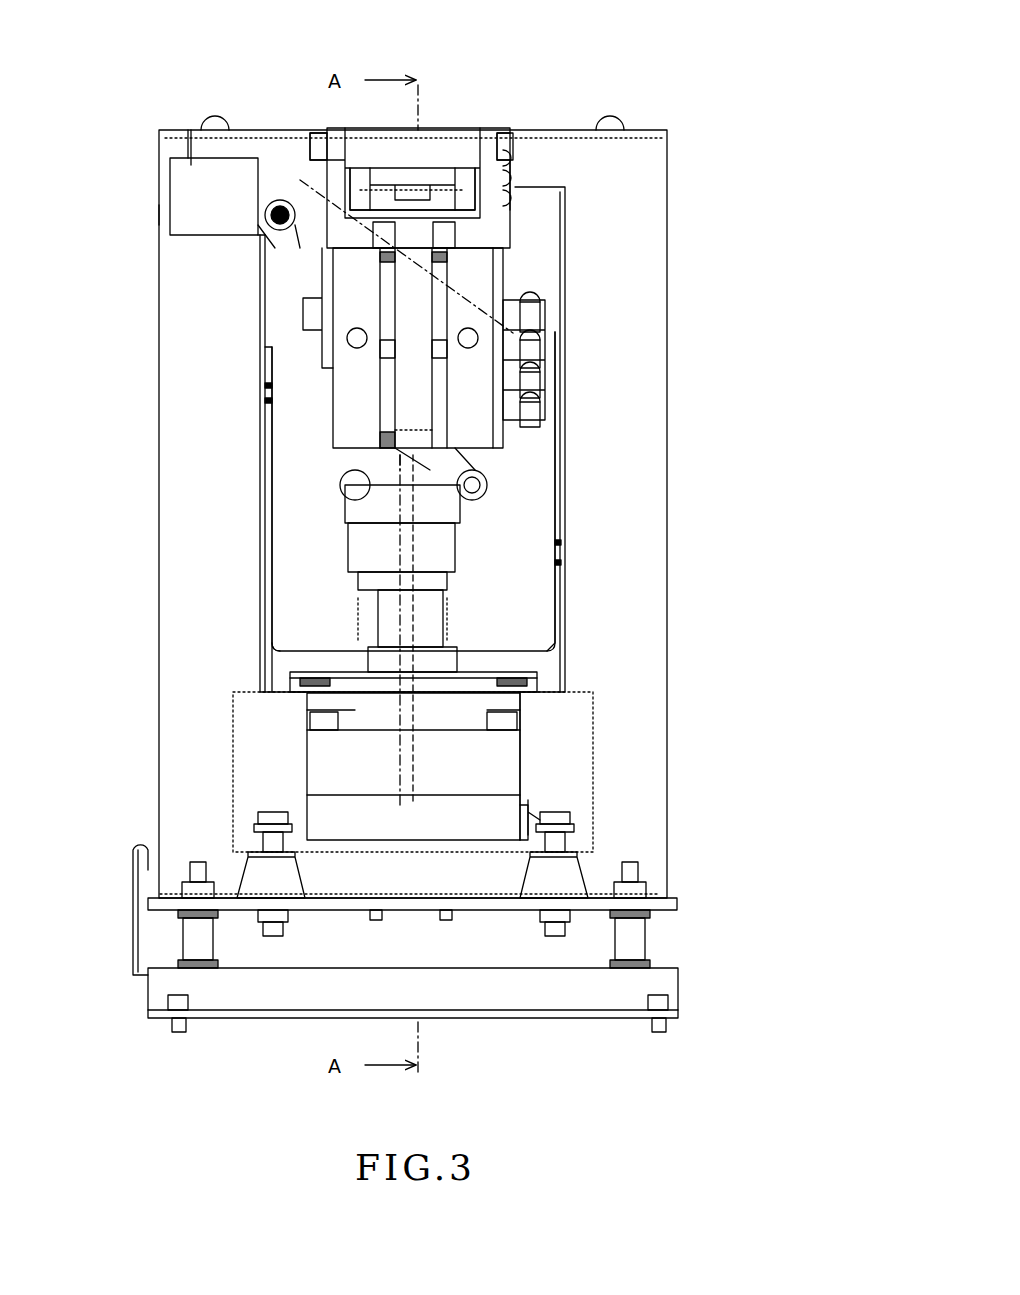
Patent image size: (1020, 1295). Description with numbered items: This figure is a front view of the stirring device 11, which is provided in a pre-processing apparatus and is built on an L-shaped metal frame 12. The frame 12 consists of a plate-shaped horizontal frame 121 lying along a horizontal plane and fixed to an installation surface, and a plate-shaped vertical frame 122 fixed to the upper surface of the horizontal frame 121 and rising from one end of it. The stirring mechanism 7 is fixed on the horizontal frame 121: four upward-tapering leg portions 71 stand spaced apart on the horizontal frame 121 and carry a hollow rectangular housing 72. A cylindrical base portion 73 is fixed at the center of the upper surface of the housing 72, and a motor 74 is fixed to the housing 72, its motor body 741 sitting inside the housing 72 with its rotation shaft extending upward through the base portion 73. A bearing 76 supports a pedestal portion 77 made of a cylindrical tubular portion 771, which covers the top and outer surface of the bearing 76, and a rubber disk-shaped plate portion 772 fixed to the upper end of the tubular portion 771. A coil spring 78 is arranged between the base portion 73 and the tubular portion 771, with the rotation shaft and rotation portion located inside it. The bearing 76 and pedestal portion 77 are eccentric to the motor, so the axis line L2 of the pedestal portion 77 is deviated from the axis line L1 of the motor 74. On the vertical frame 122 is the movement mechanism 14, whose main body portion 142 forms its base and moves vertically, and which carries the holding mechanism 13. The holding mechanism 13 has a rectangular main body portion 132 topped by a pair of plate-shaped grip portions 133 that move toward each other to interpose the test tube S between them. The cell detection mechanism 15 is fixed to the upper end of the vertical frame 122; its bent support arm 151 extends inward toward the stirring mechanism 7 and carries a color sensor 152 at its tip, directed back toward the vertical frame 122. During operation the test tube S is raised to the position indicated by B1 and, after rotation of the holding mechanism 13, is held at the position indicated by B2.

The stirring device 11 is at (690, 72).
The frame 12 is at (218, 1020).
The holding mechanism 13 is at (497, 128).
The movement mechanism 14 is at (292, 401).
The cell detection mechanism 15 is at (168, 185).
The horizontal frame 121 is at (687, 900).
The vertical frame 122 is at (158, 212).
The main body portion 132 is at (545, 300).
The grip portions 133 is at (345, 128).
The main body portion 142 is at (272, 313).
The support arm 151 is at (191, 162).
The color sensor 152 is at (276, 205).
The stirring mechanism 7 is at (422, 630).
The leg portions 71 is at (517, 900).
The housing 72 is at (595, 745).
The base portion 73 is at (457, 660).
The motor 74 is at (528, 740).
The motor body 741 is at (526, 743).
The bearing 76 is at (455, 600).
The pedestal portion 77 is at (346, 545).
The tubular portion 771 is at (358, 580).
The plate portion 772 is at (345, 500).
The spring 78 is at (460, 637).
The test tube S is at (422, 460).
The position B1 is at (465, 474).
The position B2 is at (300, 245).
The axis line of the motor L1 is at (400, 770).
The axis line of the pedestal portion L2 is at (400, 748).